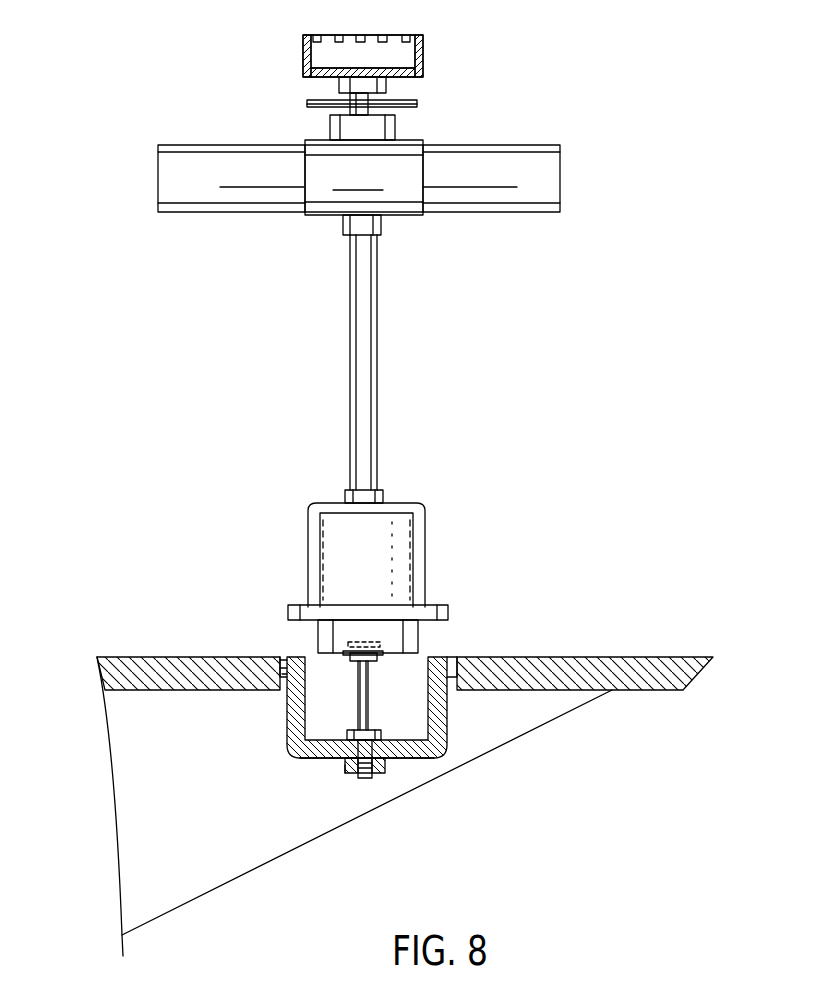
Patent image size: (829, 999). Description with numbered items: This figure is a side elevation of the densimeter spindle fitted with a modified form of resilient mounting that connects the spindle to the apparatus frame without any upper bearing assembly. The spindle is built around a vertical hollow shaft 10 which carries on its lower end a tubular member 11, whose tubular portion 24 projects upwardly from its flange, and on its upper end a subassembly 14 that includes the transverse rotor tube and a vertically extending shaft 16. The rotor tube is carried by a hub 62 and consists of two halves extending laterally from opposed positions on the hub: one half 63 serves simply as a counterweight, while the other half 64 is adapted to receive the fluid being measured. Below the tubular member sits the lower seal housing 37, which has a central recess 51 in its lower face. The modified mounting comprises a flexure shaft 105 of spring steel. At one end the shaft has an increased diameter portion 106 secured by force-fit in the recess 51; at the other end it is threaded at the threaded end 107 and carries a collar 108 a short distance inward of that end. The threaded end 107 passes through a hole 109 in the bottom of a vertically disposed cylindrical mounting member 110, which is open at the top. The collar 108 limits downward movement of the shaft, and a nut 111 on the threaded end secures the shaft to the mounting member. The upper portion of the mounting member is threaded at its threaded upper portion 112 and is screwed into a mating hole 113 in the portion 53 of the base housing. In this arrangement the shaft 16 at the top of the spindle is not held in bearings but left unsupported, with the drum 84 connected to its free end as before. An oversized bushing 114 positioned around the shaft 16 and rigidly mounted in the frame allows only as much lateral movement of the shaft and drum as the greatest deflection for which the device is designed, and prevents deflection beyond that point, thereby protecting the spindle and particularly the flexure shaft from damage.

The vertical hollow shaft 10 is at (384, 467).
The tubular member 11 is at (308, 560).
The subassembly 14 is at (315, 128).
The vertically extending shaft 16 is at (360, 103).
The tubular portion 24 is at (345, 493).
The lower seal housing 37 is at (405, 633).
The central recess 51 is at (350, 645).
The portion of the base housing 53 is at (527, 657).
The hub 62 is at (380, 235).
The counterweight half of the rotor tube 63 is at (208, 213).
The fluid-receiving half of the rotor tube 64 is at (470, 213).
The drum 84 is at (423, 60).
The flexure shaft 105 is at (368, 713).
The increased diameter portion 106 is at (410, 666).
The threaded end 107 is at (385, 772).
The collar 108 is at (381, 735).
The hole 109 is at (402, 756).
The cylindrical mounting member 110 is at (287, 748).
The nut 111 is at (345, 766).
The threaded upper portion 112 is at (428, 672).
The mating hole 113 is at (287, 697).
The oversized bushing 114 is at (417, 108).